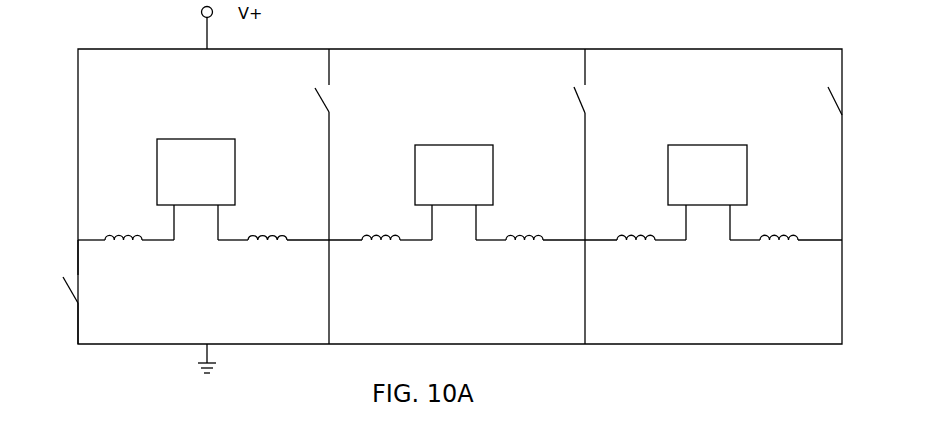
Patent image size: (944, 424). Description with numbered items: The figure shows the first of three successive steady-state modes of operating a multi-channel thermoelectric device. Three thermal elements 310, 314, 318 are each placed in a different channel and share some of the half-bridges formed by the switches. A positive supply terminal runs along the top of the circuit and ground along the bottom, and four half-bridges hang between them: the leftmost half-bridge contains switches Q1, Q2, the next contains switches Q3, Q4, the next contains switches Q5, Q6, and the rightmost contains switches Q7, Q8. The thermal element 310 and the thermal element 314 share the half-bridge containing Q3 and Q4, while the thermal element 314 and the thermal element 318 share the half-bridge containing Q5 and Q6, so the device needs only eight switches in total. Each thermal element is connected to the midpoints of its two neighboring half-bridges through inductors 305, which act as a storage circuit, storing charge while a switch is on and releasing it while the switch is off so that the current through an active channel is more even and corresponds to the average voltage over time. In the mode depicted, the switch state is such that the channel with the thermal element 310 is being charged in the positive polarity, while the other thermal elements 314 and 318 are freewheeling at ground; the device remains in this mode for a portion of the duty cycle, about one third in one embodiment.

The inductor 305 is at (123, 233).
The thermal element 310 is at (196, 189).
The thermal element 314 is at (454, 192).
The thermal element 318 is at (707, 192).
The switch Q1 is at (48, 98).
The switch Q2 is at (56, 292).
The switch Q3 is at (291, 95).
The switch Q4 is at (278, 284).
The switch Q5 is at (548, 95).
The switch Q6 is at (538, 284).
The switch Q7 is at (803, 97).
The switch Q8 is at (777, 284).